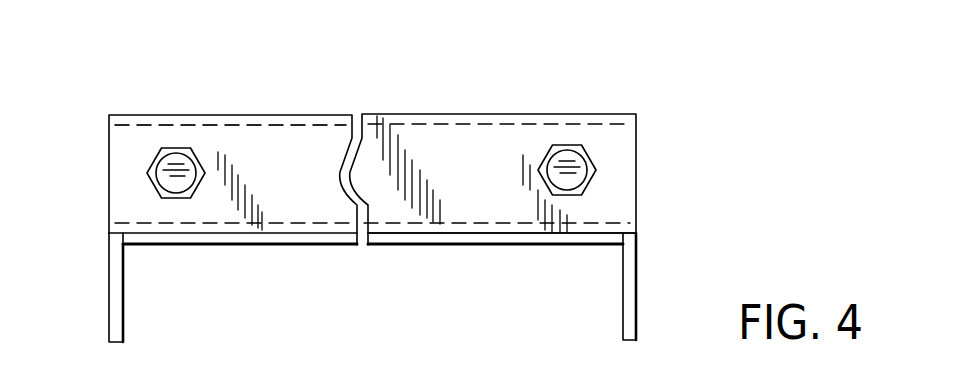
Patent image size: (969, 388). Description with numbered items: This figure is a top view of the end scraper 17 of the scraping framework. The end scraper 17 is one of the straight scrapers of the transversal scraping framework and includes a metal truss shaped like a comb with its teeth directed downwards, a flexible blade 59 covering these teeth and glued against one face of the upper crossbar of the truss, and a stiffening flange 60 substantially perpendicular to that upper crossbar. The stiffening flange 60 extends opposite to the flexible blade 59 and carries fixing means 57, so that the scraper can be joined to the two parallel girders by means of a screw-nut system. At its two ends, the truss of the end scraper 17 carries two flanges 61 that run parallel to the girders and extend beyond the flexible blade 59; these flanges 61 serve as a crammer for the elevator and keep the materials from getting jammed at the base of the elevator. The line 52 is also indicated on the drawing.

The end scraper 17 is at (490, 94).
The stiffening flange 60 is at (253, 158).
The flange line 52 is at (617, 223).
The flexible blade 59 is at (465, 237).
The fixing means 57 is at (157, 172).
The flanges 61 is at (117, 287).